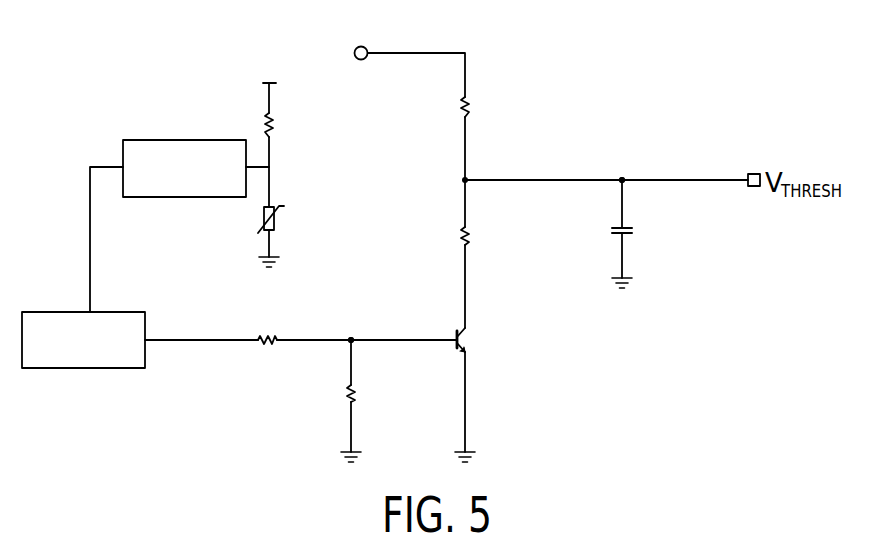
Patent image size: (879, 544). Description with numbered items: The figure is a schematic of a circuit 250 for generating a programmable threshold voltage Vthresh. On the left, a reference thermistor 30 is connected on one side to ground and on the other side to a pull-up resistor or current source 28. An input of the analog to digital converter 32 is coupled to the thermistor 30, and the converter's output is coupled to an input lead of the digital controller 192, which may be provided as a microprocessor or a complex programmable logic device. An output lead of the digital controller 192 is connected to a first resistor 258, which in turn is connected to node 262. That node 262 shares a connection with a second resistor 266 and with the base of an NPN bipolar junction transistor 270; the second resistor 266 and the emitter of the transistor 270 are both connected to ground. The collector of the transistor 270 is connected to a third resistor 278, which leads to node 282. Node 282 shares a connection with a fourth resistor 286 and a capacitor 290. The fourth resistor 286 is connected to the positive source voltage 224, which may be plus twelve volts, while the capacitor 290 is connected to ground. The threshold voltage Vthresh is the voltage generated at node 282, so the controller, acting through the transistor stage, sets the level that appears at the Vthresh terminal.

The positive source voltage 224 is at (354, 52).
The fourth resistor 286 is at (480, 110).
The third resistor 278 is at (480, 237).
The node 282 is at (622, 178).
The capacitor 290 is at (640, 231).
The NPN bipolar junction transistor 270 is at (472, 340).
The node 262 is at (351, 337).
The second resistor 266 is at (365, 393).
The first resistor 258 is at (267, 357).
The digital controller 192 is at (90, 368).
The analog to digital converter 32 is at (148, 140).
The pull-up resistor or current source 28 is at (273, 127).
The reference thermistor 30 is at (275, 223).
The circuit 250 is at (739, 74).